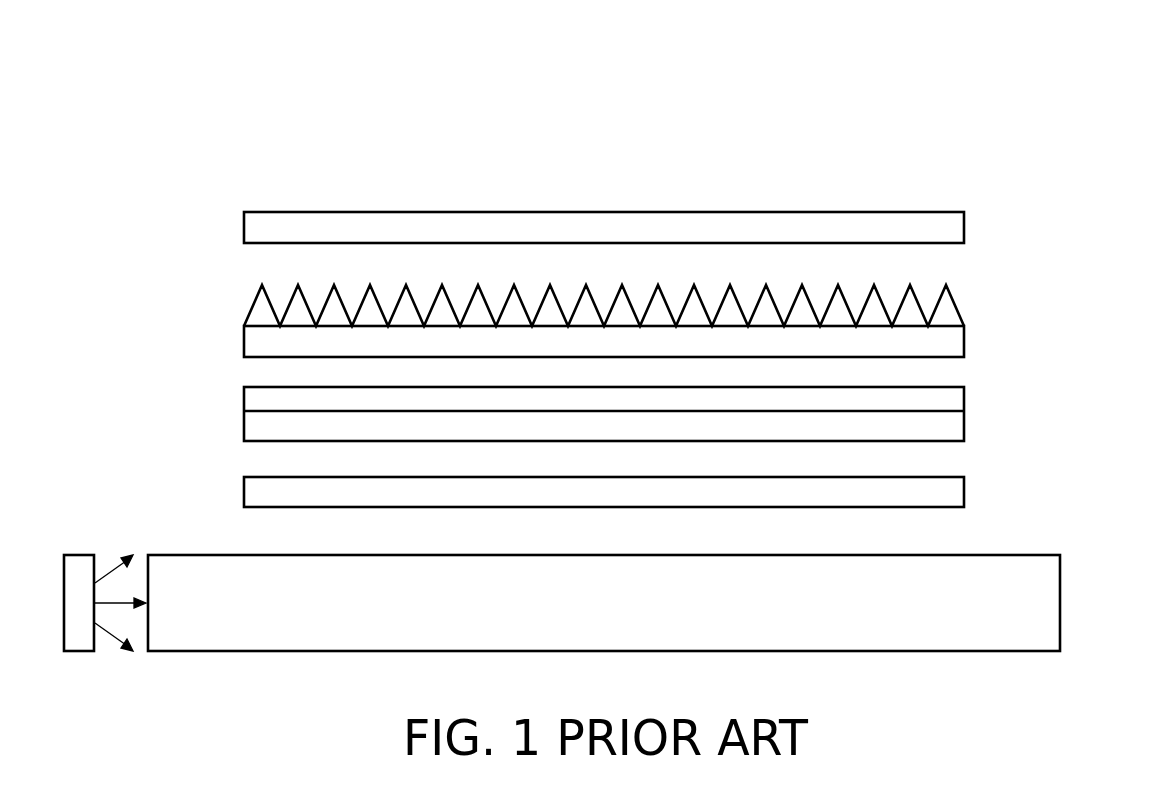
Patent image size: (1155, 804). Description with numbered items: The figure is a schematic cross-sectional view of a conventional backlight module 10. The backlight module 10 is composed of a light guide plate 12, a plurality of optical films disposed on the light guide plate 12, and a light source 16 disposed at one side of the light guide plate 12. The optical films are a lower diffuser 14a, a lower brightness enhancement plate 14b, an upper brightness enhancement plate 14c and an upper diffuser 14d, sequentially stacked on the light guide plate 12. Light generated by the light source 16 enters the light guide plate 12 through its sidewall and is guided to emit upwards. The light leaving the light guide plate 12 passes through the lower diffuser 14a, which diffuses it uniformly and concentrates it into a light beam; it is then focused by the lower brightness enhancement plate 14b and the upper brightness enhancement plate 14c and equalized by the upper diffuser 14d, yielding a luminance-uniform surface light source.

The backlight module 10 is at (1036, 108).
The light guide plate 12 is at (1061, 599).
The lower diffuser 14a is at (965, 487).
The lower brightness enhancement plate 14b is at (965, 420).
The upper brightness enhancement plate 14c is at (965, 340).
The upper diffuser 14d is at (965, 223).
The light source 16 is at (79, 555).